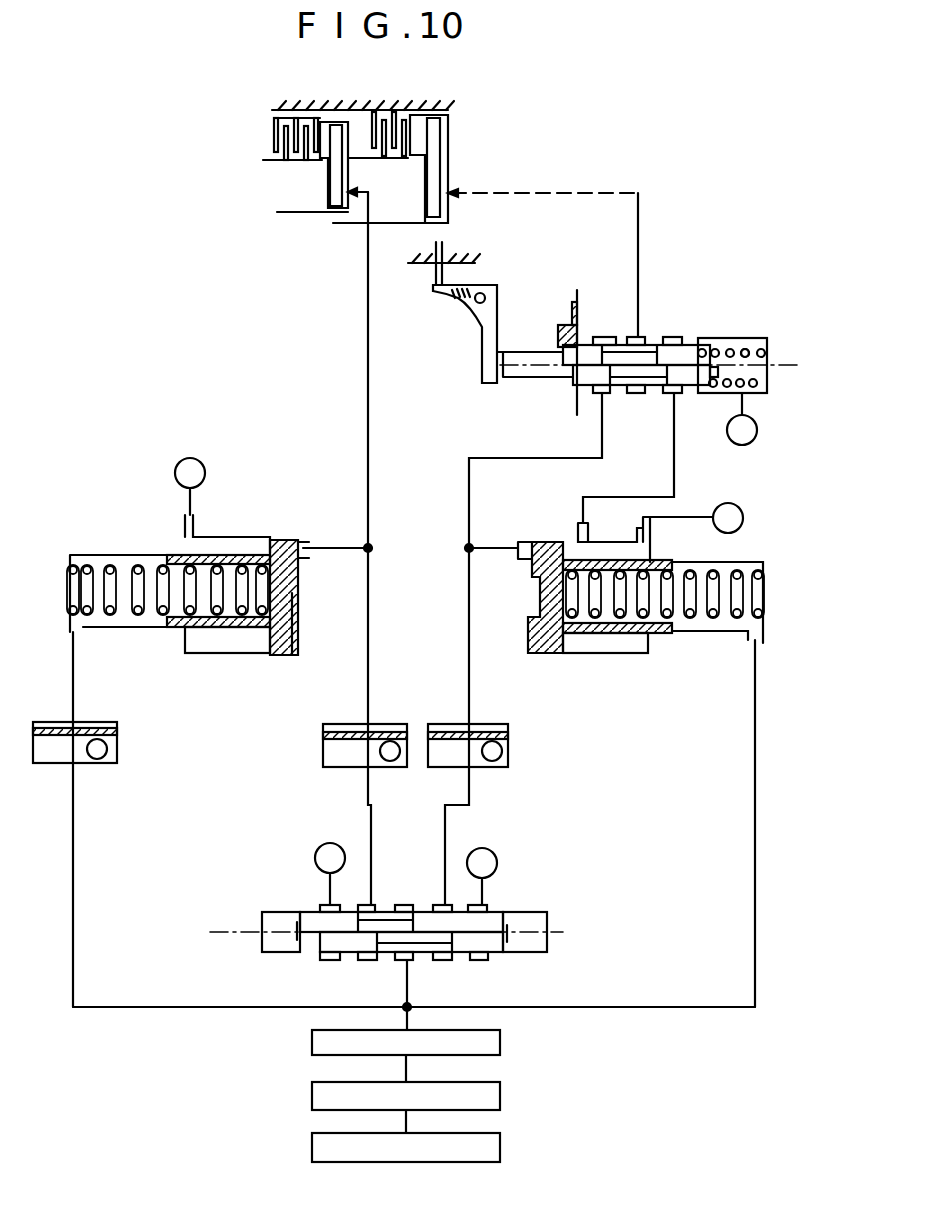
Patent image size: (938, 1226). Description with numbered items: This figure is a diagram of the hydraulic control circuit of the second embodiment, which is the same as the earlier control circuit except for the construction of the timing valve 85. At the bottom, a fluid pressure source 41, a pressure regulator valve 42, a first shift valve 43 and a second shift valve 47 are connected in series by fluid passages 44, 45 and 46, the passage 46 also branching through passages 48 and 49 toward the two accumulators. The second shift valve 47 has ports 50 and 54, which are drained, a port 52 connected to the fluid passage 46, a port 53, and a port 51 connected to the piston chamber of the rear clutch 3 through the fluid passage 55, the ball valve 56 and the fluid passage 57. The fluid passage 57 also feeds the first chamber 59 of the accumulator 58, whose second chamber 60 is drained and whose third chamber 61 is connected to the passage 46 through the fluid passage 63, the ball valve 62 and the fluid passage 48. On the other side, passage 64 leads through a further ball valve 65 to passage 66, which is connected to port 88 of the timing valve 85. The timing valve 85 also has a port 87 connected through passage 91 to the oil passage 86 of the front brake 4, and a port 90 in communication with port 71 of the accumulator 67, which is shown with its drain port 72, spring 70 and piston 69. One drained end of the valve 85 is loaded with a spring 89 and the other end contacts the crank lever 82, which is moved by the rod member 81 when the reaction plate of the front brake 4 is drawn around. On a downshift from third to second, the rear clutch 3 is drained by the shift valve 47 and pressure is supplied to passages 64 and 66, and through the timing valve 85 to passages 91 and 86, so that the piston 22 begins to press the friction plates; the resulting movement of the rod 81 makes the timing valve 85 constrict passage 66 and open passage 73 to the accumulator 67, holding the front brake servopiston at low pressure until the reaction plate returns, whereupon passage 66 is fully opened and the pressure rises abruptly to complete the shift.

The rear clutch 3 is at (322, 120).
The front brake 4 is at (392, 117).
The piston 22 is at (430, 138).
The oil passage 86 is at (490, 193).
The passage 91 is at (640, 232).
The rod member 81 is at (444, 275).
The crank lever 82 is at (498, 323).
The port 87 is at (643, 338).
The port 88 is at (601, 338).
The port 90 is at (677, 337).
The timing valve 85 is at (753, 338).
The spring 89 is at (747, 353).
The passage 73 is at (674, 484).
The port 71 is at (578, 528).
The drain port 72 is at (650, 543).
The spring 70 is at (739, 570).
The piston 69 is at (592, 648).
The accumulator 67 is at (636, 652).
The passage 66 is at (467, 653).
The fluid passage 57 is at (370, 598).
The fluid passage 63 is at (75, 689).
The accumulator 58 is at (218, 653).
The first chamber 59 is at (293, 548).
The second chamber 60 is at (240, 547).
The third chamber 61 is at (150, 566).
The ball valve 62 is at (119, 749).
The ball valve 56 is at (323, 750).
The check valve 65 is at (510, 756).
The fluid passage 55 is at (372, 826).
The passage 64 is at (469, 796).
The port 53 is at (452, 904).
The port 50 is at (325, 905).
The port 51 is at (376, 904).
The port 52 is at (413, 904).
The port 54 is at (488, 905).
The fluid passage 46 is at (412, 1017).
The 2-3 shift valve 47 is at (534, 957).
The fluid passage 48 is at (188, 1010).
The conduit 49 is at (643, 1010).
The 1-2 shift valve 43 is at (502, 1047).
The conduit 45 is at (406, 1070).
The pressure regulator valve 42 is at (502, 1098).
The fluid passage 44 is at (406, 1122).
The fluid pressure source 41 is at (502, 1153).